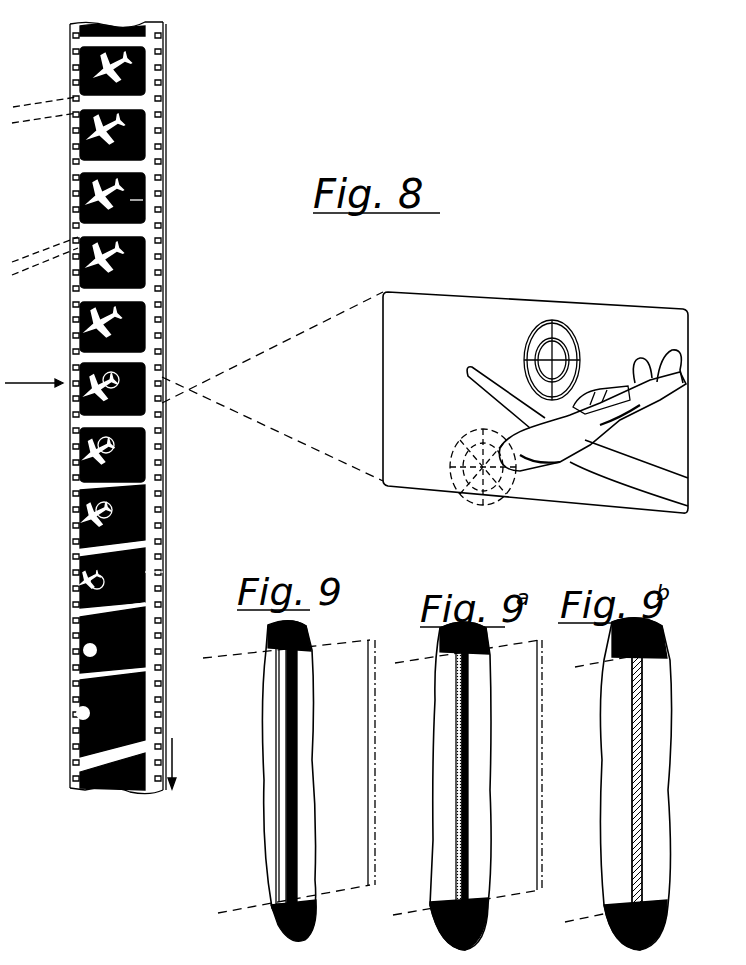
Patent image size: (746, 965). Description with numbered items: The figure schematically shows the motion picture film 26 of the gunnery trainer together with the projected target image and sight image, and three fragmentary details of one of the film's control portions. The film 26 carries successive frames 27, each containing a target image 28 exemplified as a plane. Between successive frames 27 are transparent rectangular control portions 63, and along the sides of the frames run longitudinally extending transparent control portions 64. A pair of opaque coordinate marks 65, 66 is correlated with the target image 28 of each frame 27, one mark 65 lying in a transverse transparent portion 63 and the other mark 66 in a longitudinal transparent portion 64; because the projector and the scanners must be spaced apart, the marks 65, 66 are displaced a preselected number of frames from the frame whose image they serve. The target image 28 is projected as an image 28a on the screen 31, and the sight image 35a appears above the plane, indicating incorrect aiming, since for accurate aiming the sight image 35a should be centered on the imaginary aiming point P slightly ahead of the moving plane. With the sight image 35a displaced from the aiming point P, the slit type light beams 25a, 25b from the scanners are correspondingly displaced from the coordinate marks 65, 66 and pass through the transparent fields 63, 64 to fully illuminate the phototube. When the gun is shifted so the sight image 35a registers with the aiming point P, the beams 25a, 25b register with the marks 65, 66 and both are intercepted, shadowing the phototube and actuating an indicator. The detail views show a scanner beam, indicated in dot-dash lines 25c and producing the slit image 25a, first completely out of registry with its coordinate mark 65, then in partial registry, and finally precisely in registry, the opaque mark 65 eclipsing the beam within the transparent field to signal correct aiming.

In FIG. 8, the film 26 is at (64, 657).
In FIG. 8, the frame 27 is at (143, 589).
In FIG. 8, the target image 28 is at (80, 180).
In FIG. 8, the projected target image 28a is at (562, 466).
In FIG. 8, the screen 31 is at (505, 298).
In FIG. 8, the sight image 35a is at (550, 356).
In FIG. 8, the transverse transparent control portion 63 is at (135, 102).
In FIG. 8, the longitudinal transparent control portion 64 is at (147, 578).
In FIG. 8, the coordinate mark 65 is at (128, 40).
In FIG. 9, the coordinate mark 65 is at (297, 752).
In FIG. 9A, the coordinate mark 65 is at (468, 758).
In FIG. 9B, the coordinate mark 65 is at (642, 732).
In FIG. 8, the coordinate mark 66 is at (145, 48).
In FIG. 9, the slit type light beam 25a is at (277, 772).
In FIG. 9A, the slit type light beam 25a is at (457, 797).
In FIG. 9B, the slit type light beam 25a is at (633, 712).
In FIG. 8, the slit type light beam 25b is at (143, 213).
In FIG. 9, the scanner beam 25c is at (289, 776).
In FIG. 9A, the scanner beam 25c is at (467, 777).
In FIG. 8, the imaginary aiming point P is at (476, 478).